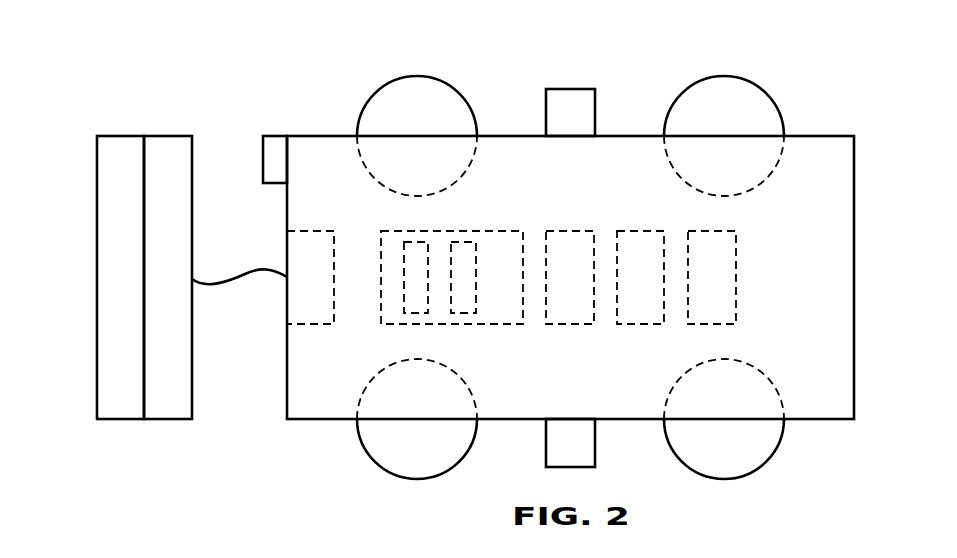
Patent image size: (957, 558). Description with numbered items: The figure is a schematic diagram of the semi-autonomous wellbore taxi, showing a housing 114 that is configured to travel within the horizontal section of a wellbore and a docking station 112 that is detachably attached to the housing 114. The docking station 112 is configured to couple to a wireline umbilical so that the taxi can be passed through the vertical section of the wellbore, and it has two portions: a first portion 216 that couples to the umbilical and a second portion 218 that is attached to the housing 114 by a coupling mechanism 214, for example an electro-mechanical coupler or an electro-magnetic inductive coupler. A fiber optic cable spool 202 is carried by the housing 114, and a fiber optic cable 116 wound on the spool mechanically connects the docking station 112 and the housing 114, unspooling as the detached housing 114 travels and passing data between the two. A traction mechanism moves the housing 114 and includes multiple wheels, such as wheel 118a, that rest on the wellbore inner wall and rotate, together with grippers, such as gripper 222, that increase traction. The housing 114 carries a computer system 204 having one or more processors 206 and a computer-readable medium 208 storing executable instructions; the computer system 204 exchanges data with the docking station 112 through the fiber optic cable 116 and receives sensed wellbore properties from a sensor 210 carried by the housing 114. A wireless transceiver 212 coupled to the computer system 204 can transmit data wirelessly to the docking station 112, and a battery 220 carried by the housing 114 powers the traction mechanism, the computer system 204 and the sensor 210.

The docking station 112 is at (129, 246).
The housing 114 is at (549, 244).
The fiber optic cable 116 is at (262, 272).
The wheel 118a is at (727, 77).
The fiber optic cable spool 202 is at (318, 326).
The computer system 204 is at (438, 289).
The processors 206 is at (402, 255).
The computer-readable medium 208 is at (478, 250).
The sensor 210 is at (570, 326).
The wireless transceiver 212 is at (640, 230).
The coupling mechanism 214 is at (274, 135).
The first portion 216 is at (120, 410).
The second portion 218 is at (167, 145).
The battery 220 is at (737, 279).
The gripper 222 is at (569, 88).